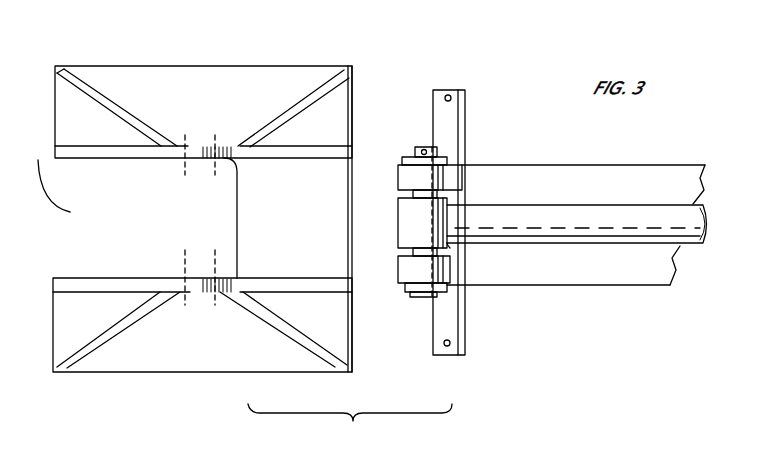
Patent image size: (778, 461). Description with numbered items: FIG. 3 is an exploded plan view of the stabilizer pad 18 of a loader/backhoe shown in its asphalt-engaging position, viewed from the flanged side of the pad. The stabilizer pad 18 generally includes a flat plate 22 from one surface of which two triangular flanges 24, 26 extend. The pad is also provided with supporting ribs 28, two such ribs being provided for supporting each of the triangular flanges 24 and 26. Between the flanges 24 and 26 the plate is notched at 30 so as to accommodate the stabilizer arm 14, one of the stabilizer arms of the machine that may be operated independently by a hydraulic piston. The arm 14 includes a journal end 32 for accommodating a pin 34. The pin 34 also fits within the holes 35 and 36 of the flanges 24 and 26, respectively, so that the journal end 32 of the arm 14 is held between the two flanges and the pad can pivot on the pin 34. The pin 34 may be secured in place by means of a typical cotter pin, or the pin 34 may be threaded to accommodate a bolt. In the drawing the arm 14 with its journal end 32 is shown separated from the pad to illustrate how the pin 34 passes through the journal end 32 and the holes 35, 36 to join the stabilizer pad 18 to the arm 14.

The stabilizer arm 14 is at (562, 270).
The stabilizer pad 18 is at (197, 87).
The flat plate 22 is at (266, 2).
The triangular flange 24 is at (138, 285).
The triangular flange 26 is at (142, 152).
The supporting rib 28 is at (303, 100).
The notch 30 is at (48, 177).
The journal end 32 is at (390, 248).
The pin 34 is at (458, 126).
The hole 35 is at (207, 282).
The hole 36 is at (208, 160).